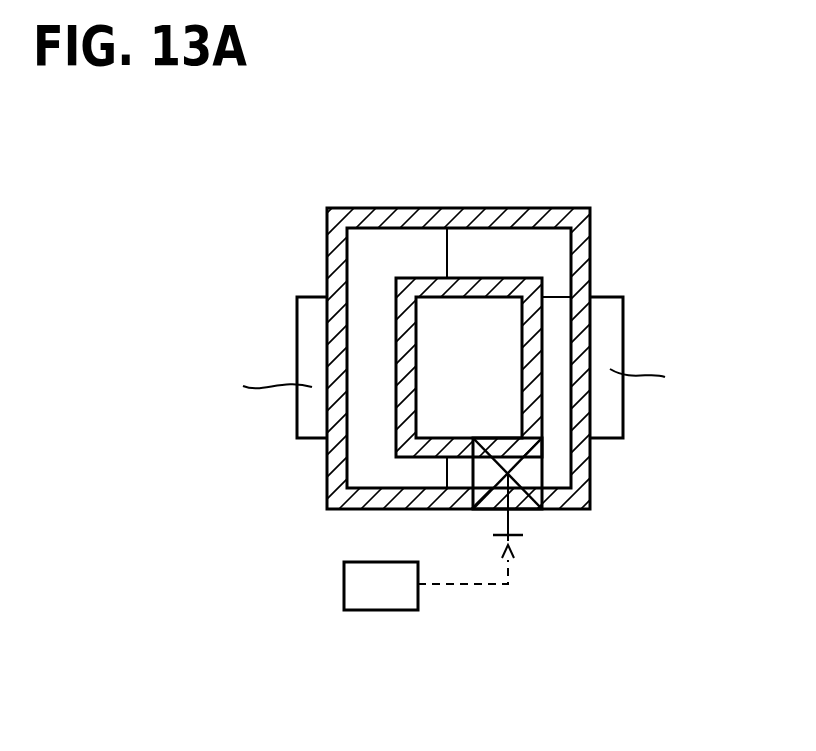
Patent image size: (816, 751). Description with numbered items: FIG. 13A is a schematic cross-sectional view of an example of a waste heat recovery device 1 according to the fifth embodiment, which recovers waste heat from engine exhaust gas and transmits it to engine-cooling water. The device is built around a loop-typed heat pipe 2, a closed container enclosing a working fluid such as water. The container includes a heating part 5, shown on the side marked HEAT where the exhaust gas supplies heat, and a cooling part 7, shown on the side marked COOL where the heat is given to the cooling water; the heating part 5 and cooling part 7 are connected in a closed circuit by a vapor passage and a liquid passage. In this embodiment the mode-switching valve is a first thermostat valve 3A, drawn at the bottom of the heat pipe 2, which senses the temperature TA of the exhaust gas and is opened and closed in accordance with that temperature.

The waste heat recovery device 1 is at (371, 190).
The loop-typed heat pipe 2 is at (531, 208).
The first thermostat valve 3A is at (543, 473).
The heating part 5 is at (365, 456).
The cooling part 7 is at (557, 323).